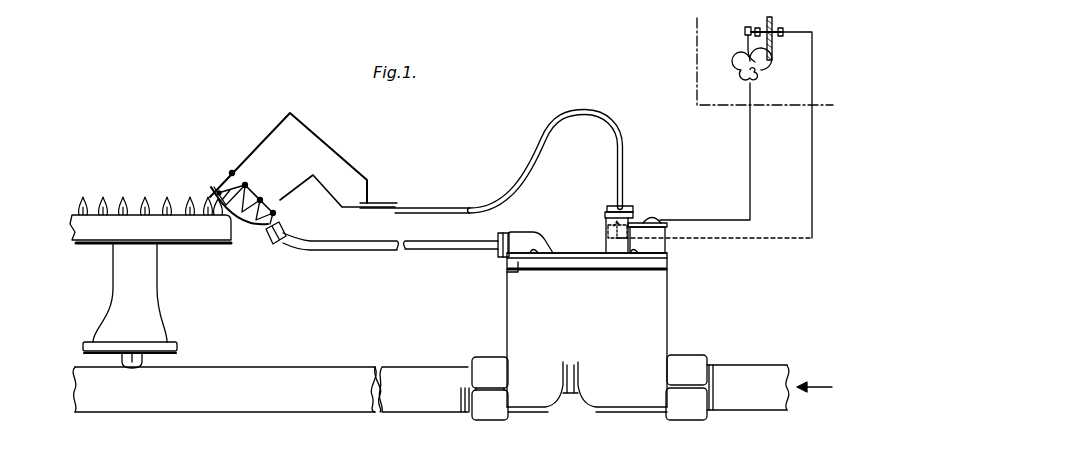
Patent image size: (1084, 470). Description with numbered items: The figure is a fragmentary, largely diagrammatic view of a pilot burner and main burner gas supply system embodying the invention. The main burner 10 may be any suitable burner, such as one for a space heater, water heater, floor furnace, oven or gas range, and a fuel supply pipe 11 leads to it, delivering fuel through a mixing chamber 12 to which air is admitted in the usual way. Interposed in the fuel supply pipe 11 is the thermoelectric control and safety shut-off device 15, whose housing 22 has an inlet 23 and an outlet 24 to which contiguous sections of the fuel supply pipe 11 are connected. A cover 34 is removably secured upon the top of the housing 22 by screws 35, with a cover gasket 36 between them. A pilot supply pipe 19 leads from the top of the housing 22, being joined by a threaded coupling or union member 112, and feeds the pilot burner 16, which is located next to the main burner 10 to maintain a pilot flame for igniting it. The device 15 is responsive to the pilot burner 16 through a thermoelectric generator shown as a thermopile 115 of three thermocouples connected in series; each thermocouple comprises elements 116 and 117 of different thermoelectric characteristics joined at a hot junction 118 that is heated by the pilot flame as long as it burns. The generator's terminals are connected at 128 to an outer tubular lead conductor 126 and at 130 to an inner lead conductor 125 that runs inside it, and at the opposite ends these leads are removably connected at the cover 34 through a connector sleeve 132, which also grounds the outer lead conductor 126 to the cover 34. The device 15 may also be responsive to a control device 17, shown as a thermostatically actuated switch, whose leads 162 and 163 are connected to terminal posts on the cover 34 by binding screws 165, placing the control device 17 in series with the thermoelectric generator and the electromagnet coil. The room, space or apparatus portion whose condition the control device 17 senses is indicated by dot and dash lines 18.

The main burner 10 is at (110, 220).
The fuel supply pipe 11 is at (245, 403).
The mixing chamber 12 is at (160, 326).
The thermoelectric control and safety shut-off device 15 is at (575, 331).
The pilot burner 16 is at (272, 245).
The control device 17 is at (748, 28).
The dot and dash lines 18 is at (697, 40).
The pilot supply pipe 19 is at (415, 247).
The housing 22 is at (653, 293).
The inlet 23 is at (690, 412).
The outlet 24 is at (490, 368).
The cover 34 is at (660, 258).
The screws 35 is at (536, 258).
The cover gasket 36 is at (518, 272).
The threaded coupling or union member 112 is at (500, 237).
The thermopile 115 is at (235, 158).
The thermocouple element 116 is at (230, 180).
The thermocouple element 117 is at (227, 202).
The hot junction 118 is at (220, 188).
The inner lead conductor 125 is at (383, 205).
The outer tubular lead conductor 126 is at (550, 128).
The connection to outer lead conductor 128 is at (357, 172).
The connection to inner lead conductor 130 is at (323, 180).
The connector sleeve 132 is at (623, 207).
The lead 162 is at (750, 160).
The lead 163 is at (812, 183).
The binding screws 165 is at (605, 225).